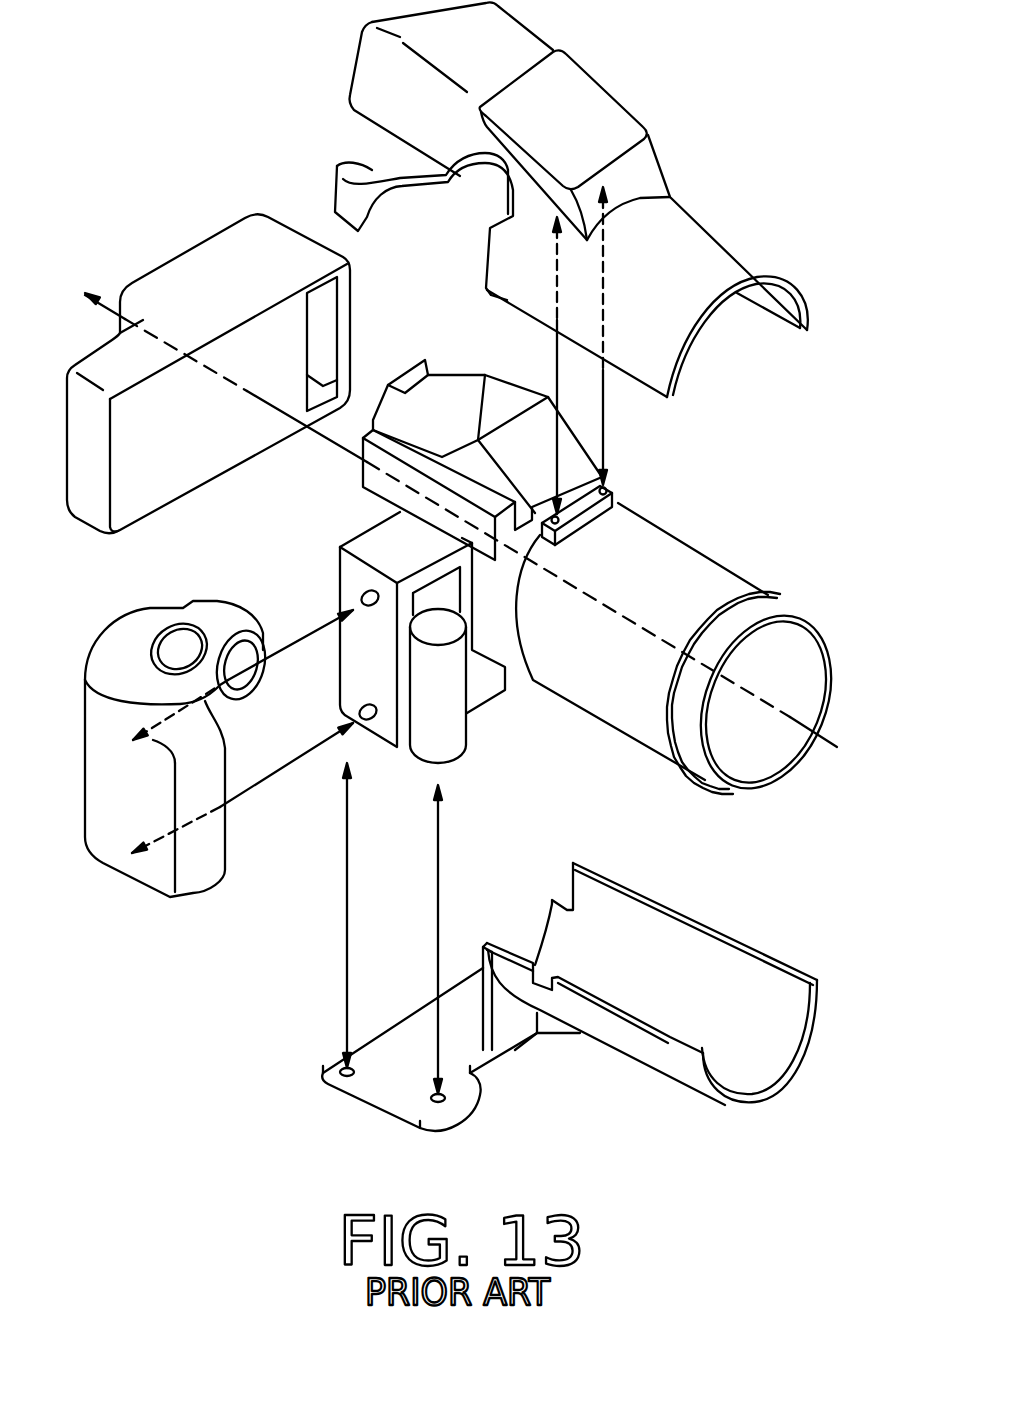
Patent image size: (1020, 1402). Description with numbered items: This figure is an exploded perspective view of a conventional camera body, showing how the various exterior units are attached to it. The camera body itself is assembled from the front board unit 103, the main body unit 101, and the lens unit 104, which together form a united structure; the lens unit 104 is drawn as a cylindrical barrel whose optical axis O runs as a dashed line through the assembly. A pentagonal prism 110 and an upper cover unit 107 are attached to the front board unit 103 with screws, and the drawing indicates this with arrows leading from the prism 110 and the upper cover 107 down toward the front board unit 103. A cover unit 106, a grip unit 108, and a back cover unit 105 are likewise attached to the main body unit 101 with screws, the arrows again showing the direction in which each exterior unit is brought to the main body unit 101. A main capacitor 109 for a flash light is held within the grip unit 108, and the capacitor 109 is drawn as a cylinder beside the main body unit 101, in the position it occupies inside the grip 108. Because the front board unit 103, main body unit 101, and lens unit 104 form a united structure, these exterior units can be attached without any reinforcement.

The main body unit 101 is at (378, 540).
The front board unit 103 is at (622, 500).
The lens unit 104 is at (687, 553).
The back cover unit 105 is at (207, 247).
The cover unit 106 is at (613, 1030).
The upper cover unit 107 is at (703, 233).
The grip unit 108 is at (157, 869).
The main capacitor 109 is at (443, 707).
The pentagonal prism 110 is at (535, 450).
The optical axis O is at (820, 737).